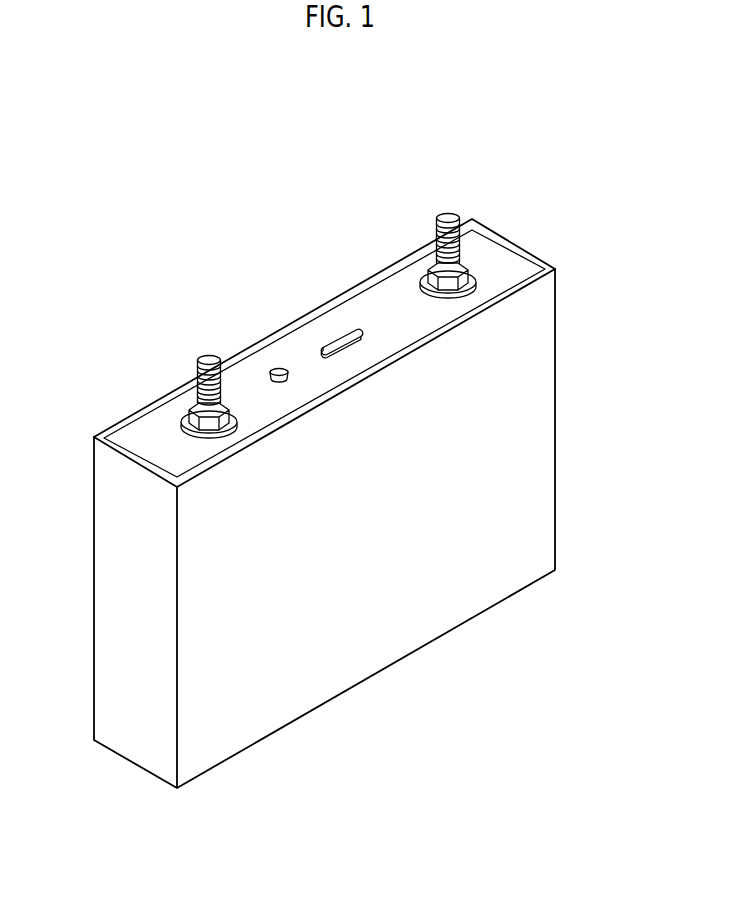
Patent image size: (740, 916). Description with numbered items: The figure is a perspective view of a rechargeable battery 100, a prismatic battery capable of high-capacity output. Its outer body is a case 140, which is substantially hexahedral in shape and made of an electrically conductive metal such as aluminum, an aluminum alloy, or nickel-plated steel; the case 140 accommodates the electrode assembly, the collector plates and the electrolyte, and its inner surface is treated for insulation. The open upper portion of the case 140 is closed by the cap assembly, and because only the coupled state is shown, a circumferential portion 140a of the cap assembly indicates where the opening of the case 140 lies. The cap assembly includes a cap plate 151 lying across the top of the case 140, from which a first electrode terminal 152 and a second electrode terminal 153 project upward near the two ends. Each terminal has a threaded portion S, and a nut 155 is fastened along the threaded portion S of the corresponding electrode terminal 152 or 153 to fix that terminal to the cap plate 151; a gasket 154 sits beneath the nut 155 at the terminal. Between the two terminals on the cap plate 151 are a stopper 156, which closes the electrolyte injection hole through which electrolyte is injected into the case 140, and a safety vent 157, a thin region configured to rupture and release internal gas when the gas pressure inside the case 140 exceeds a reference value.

The rechargeable battery 100 is at (568, 208).
The case 140 is at (543, 339).
The circumferential portion 140a is at (410, 265).
The cap plate 151 is at (377, 308).
The first electrode terminal 152 is at (208, 357).
The second electrode terminal 153 is at (449, 216).
The gasket 154 is at (186, 416).
The nut 155 is at (192, 400).
The stopper 156 is at (277, 368).
The safety vent 157 is at (331, 346).
The threaded portion S is at (462, 230).